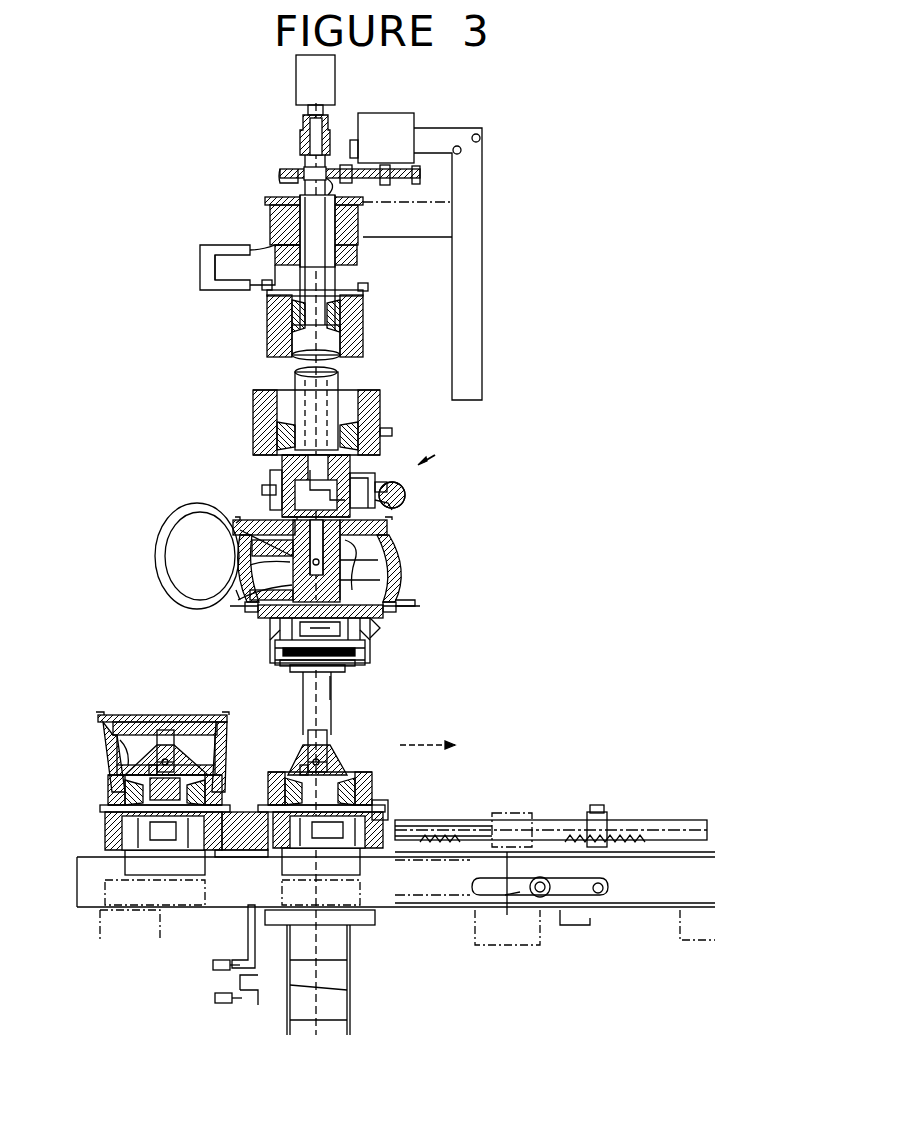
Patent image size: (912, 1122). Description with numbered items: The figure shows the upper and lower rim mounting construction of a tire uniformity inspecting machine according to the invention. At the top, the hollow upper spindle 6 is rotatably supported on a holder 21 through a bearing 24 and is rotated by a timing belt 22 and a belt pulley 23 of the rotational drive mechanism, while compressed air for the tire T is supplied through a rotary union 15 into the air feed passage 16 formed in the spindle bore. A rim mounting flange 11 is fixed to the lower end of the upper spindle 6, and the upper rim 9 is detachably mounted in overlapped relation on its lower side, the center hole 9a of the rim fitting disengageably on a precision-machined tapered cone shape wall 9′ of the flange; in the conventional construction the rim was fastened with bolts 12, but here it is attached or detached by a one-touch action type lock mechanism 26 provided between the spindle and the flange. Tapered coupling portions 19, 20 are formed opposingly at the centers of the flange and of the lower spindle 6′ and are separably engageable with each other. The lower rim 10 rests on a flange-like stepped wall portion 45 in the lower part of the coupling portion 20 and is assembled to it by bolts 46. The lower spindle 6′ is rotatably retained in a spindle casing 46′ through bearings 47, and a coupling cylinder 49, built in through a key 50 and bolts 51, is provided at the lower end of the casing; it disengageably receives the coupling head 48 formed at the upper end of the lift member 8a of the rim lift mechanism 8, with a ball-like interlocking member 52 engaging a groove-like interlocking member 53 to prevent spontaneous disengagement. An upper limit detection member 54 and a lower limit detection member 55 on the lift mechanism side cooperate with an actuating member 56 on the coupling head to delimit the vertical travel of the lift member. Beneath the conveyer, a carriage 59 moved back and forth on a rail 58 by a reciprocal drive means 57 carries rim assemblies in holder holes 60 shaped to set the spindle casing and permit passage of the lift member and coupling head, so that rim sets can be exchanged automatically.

The rotary union 15 is at (333, 82).
The timing belt 22 is at (470, 200).
The belt pulley 23 is at (262, 218).
The bearing 24 is at (280, 320).
The air feed passage 16 is at (345, 378).
The upper spindle 6 is at (335, 395).
The holder 21 is at (257, 410).
The one-touch action type lock mechanism 26 is at (445, 458).
The rim mounting flange 11 is at (400, 508).
The tapered cone shape wall 9′ is at (300, 530).
The upper rim 9 is at (400, 545).
The center hole 9a is at (380, 568).
The bolts 12 is at (240, 533).
The coupling portion 19 is at (262, 562).
The coupling portion 20 is at (245, 590).
The tire T is at (180, 515).
The flange-like stepped wall portion 45 is at (380, 585).
The lower rim 10 is at (380, 610).
The bolts 46 is at (262, 610).
The bearings 47 is at (365, 630).
The spindle casing 46′ is at (372, 620).
The lower spindle 6′ is at (275, 628).
The bolts 51 is at (275, 652).
The key 50 is at (355, 665).
The interlocking member 52 is at (290, 670).
The interlocking member 53 is at (300, 676).
The coupling cylinder 49 is at (355, 672).
The coupling head 48 is at (360, 672).
The lift member 8a is at (320, 718).
The carriage 59 is at (242, 825).
The holder holes 60 is at (108, 830).
The reciprocal drive means 57 is at (628, 820).
The rail 58 is at (465, 830).
The rim lift mechanism 8 is at (350, 1005).
The actuating member 56 is at (250, 955).
The upper limit detection member 54 is at (212, 965).
The lower limit detection member 55 is at (213, 998).